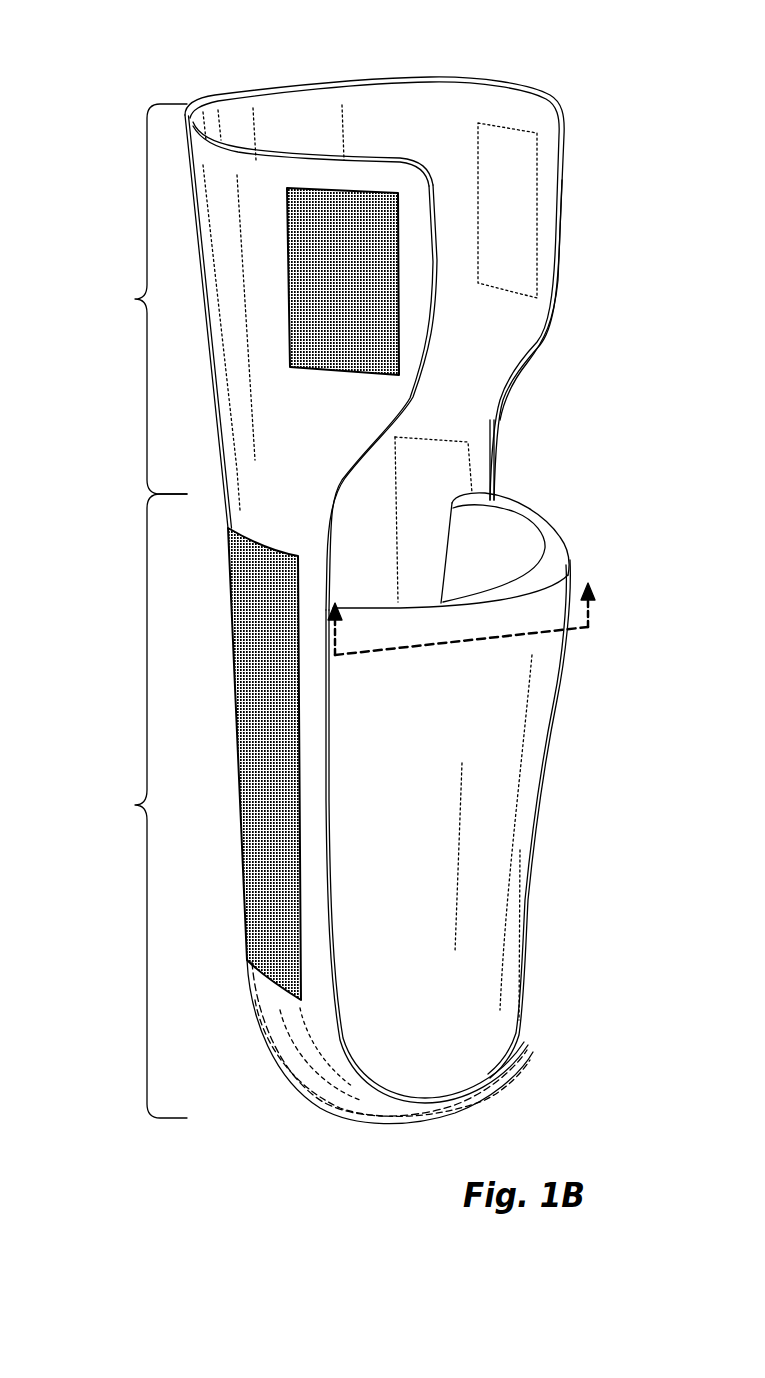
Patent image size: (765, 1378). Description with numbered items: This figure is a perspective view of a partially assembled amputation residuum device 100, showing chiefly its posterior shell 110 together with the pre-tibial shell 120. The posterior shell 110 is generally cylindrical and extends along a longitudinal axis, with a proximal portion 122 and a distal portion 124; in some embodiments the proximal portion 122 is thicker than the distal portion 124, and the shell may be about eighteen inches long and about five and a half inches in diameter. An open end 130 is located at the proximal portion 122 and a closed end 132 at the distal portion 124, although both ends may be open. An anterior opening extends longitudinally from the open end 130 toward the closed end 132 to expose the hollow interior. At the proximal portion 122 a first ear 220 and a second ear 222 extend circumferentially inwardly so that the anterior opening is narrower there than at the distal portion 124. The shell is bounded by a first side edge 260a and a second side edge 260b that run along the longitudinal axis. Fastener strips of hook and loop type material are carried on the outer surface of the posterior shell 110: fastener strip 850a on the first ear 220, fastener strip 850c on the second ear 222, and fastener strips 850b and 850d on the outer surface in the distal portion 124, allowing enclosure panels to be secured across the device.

The amputation residuum device 100 is at (575, 78).
The posterior shell 110 is at (430, 90).
The pre-tibial shell 120 is at (500, 847).
The proximal portion 122 is at (118, 299).
The distal portion 124 is at (309, 805).
The open end 130 is at (307, 101).
The closed end 132 is at (397, 1115).
The first ear 220 is at (418, 288).
The second ear 222 is at (543, 208).
The first side edge 260a is at (333, 793).
The second side edge 260b is at (493, 473).
The fastener strip 850a is at (298, 243).
The fastener strip 850b is at (242, 647).
The fastener strip 850c is at (527, 155).
The fastener strip 850d is at (458, 452).